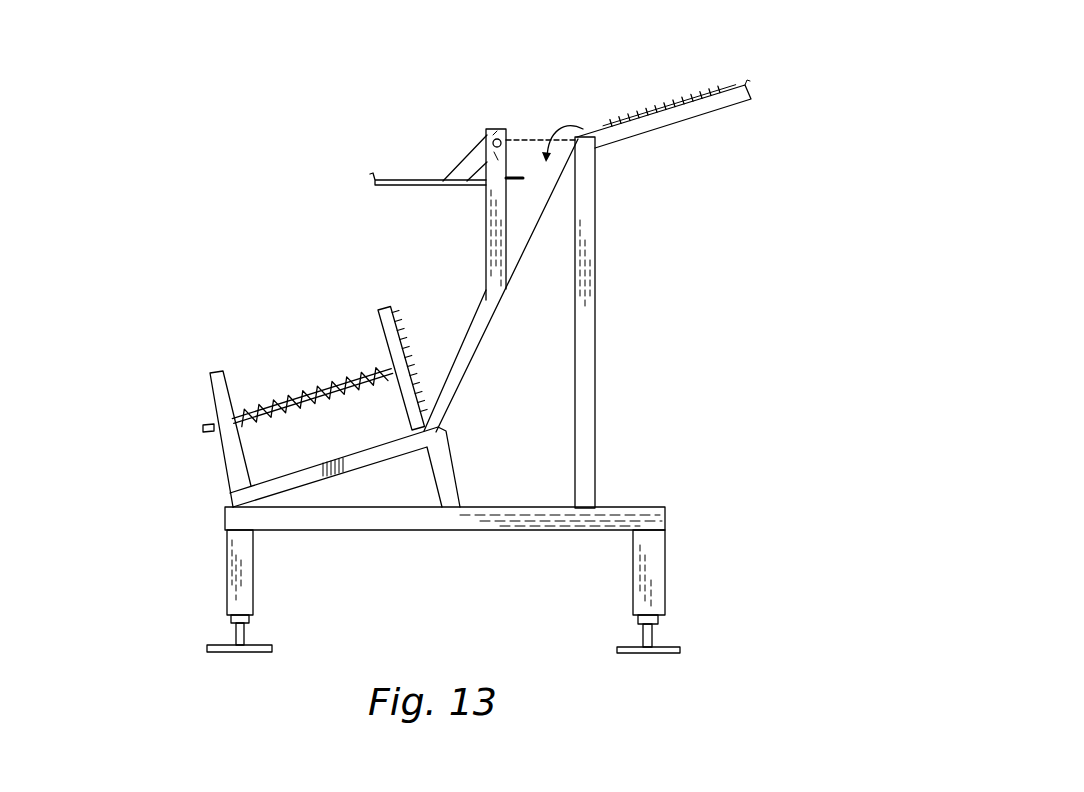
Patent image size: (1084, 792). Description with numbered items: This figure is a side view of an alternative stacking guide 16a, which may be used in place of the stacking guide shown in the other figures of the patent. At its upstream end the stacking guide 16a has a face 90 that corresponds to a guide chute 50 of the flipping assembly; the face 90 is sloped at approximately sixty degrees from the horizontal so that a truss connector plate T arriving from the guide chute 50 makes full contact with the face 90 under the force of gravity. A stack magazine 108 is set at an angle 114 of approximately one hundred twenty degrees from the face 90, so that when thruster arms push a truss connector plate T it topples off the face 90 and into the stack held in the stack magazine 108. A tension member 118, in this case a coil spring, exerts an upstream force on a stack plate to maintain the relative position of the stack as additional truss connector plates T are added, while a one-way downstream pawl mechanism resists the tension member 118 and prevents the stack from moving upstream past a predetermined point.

The stacking guide 16a is at (294, 401).
The stack magazine 108 is at (232, 457).
The angle 114 is at (398, 403).
The tension member 118 is at (313, 390).
The face 90 is at (398, 346).
The guide chute 50 is at (470, 347).
The truss connector plate T is at (603, 130).